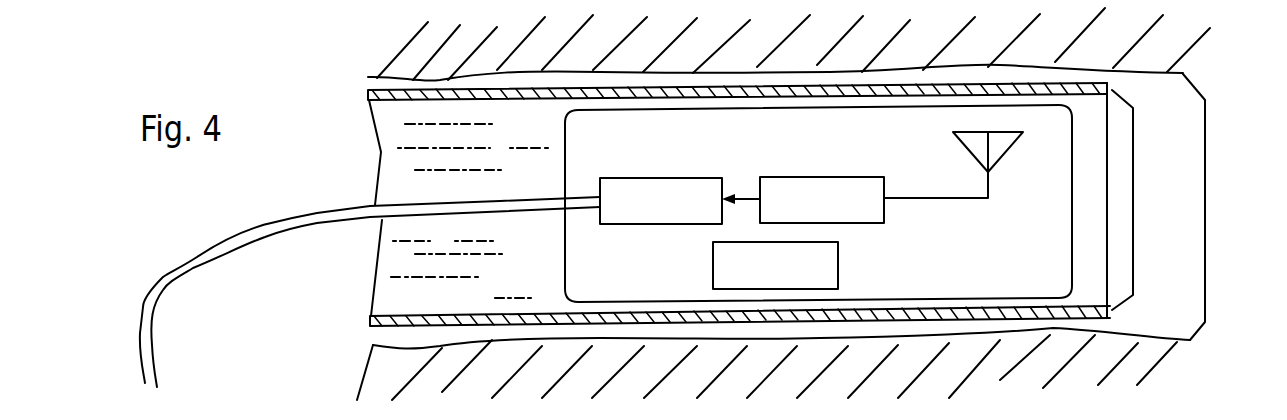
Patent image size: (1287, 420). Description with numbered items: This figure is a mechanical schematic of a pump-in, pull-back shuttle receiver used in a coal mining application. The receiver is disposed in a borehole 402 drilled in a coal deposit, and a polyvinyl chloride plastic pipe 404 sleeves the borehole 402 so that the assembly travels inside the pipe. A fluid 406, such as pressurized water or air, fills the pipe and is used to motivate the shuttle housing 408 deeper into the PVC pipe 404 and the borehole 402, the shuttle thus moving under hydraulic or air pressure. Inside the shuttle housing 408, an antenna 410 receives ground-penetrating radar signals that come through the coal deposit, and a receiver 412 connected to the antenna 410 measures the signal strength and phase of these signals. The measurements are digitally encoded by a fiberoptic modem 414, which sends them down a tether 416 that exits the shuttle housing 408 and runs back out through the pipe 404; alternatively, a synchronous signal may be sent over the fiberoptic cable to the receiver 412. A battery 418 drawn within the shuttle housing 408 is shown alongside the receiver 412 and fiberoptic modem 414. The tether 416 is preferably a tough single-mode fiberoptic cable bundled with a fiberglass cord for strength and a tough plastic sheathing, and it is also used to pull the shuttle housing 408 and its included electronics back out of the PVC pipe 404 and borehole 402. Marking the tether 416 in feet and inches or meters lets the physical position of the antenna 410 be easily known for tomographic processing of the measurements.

The borehole 402 is at (1205, 197).
The polyvinyl chloride plastic pipe 404 is at (1133, 190).
The fluid 406 is at (541, 283).
The shuttle housing 408 is at (568, 167).
The antenna 410 is at (1010, 146).
The receiver 412 is at (845, 177).
The fiberoptic modem 414 is at (632, 178).
The tether 416 is at (264, 224).
The battery 418 is at (838, 243).